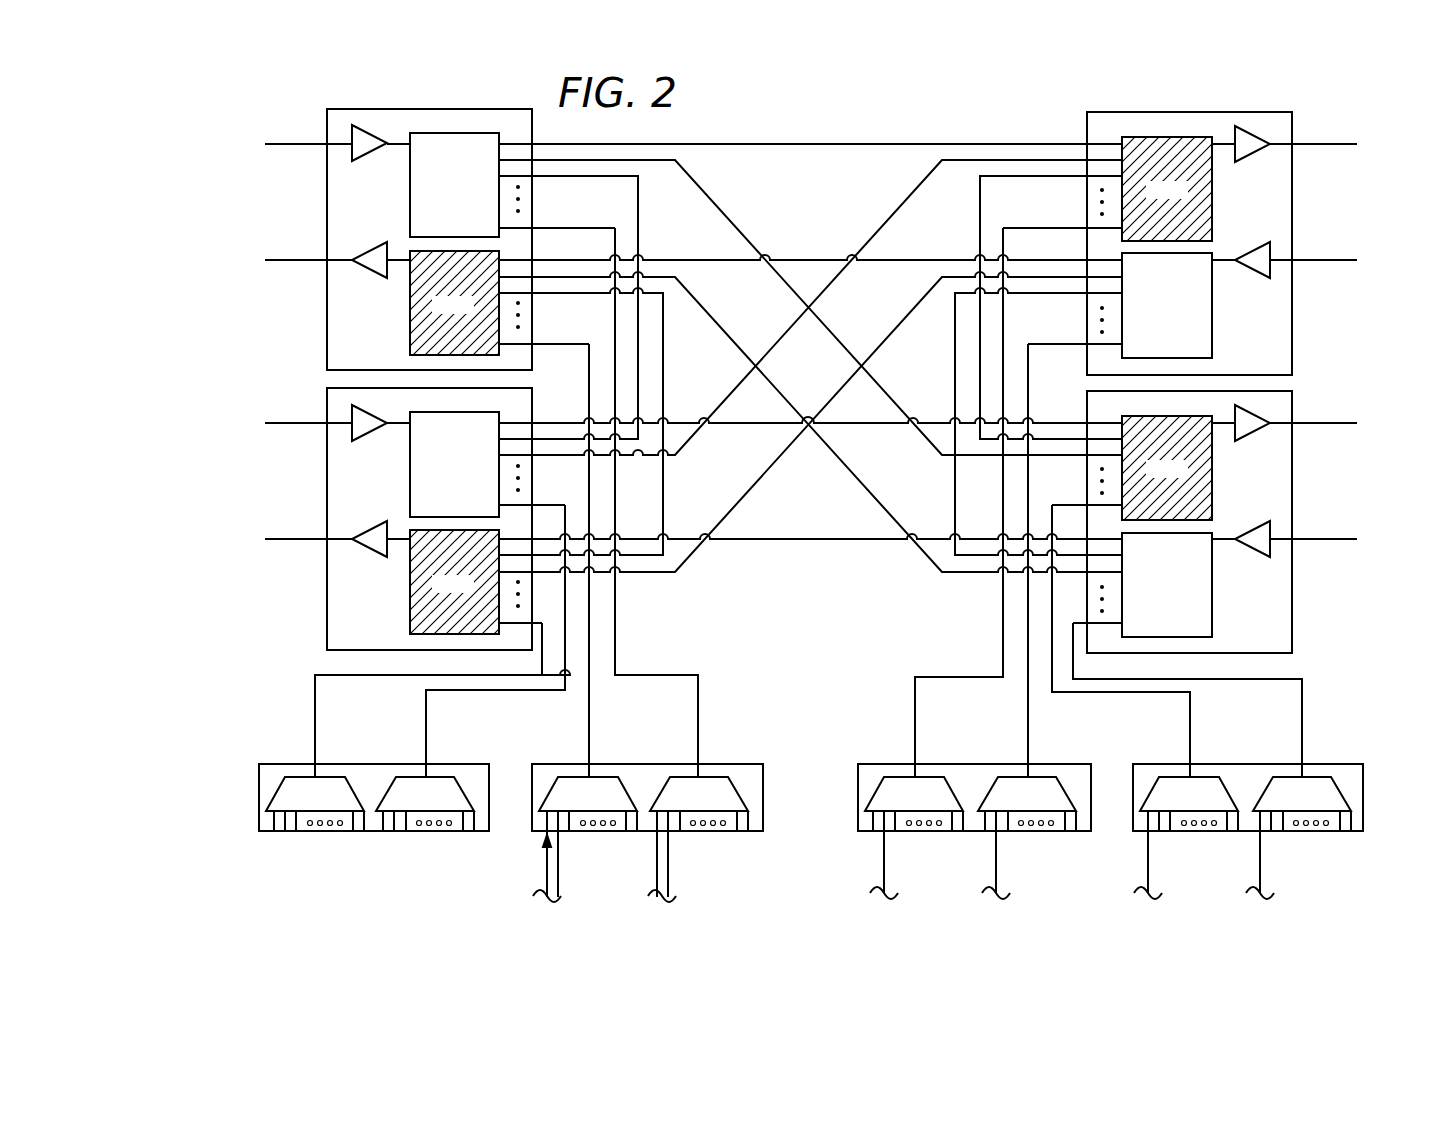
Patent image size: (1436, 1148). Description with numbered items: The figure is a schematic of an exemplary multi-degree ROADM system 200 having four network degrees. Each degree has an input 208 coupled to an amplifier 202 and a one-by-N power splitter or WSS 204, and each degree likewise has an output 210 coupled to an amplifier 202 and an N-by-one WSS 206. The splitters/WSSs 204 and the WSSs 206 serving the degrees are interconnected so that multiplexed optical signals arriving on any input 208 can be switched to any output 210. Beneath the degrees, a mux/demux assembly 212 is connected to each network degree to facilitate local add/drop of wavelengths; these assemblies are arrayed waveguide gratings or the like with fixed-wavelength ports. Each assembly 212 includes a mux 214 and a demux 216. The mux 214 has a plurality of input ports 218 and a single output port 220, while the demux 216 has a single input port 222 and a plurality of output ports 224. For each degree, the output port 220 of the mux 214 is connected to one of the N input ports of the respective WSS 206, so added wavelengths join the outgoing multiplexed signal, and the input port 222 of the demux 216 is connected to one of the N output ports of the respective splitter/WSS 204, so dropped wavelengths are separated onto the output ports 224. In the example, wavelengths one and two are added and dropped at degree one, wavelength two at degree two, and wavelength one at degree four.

The multi-degree ROADM system 200 is at (845, 129).
The amplifier 202 is at (350, 157).
The 1×N PS or WSS 204 is at (410, 185).
The N×1 WSS 206 is at (410, 327).
The input 208 is at (1340, 571).
The output 210 is at (1338, 125).
The mux/demux assembly 212 is at (1385, 790).
The mux 214 is at (325, 776).
The demux 216 is at (437, 776).
The input ports 218 is at (1180, 856).
The output port 220 is at (307, 776).
The input port 222 is at (416, 776).
The output ports 224 is at (1297, 857).